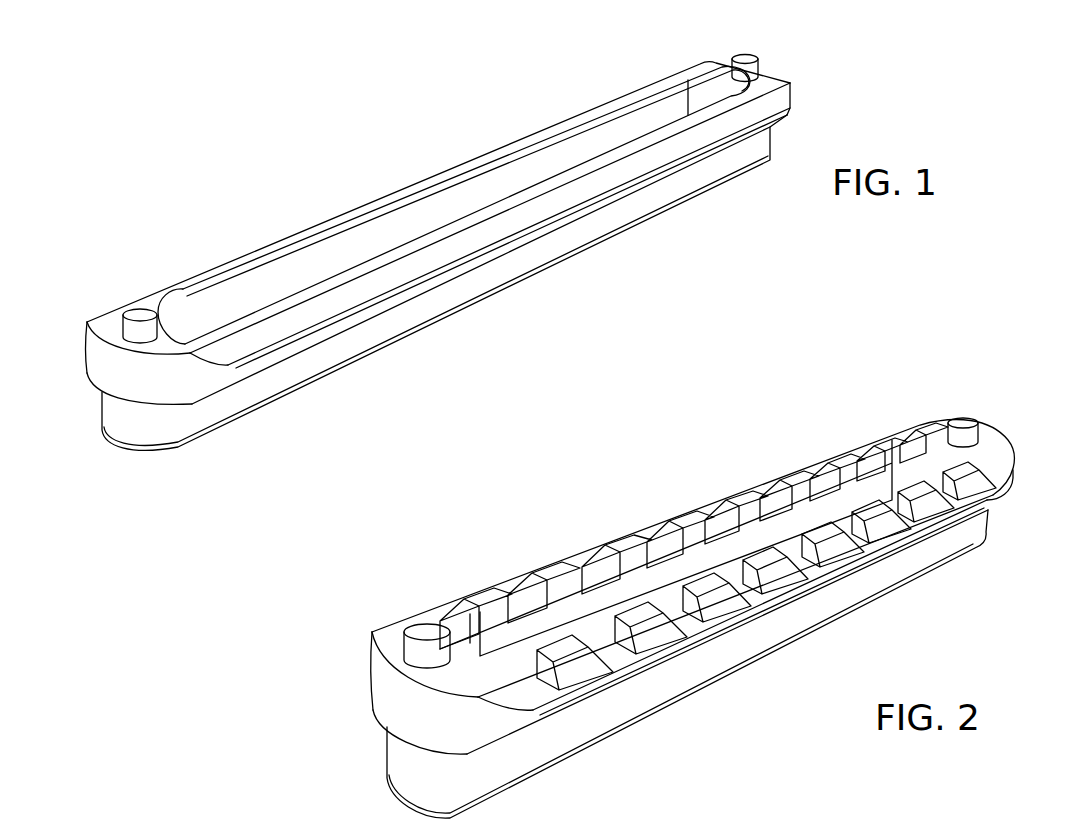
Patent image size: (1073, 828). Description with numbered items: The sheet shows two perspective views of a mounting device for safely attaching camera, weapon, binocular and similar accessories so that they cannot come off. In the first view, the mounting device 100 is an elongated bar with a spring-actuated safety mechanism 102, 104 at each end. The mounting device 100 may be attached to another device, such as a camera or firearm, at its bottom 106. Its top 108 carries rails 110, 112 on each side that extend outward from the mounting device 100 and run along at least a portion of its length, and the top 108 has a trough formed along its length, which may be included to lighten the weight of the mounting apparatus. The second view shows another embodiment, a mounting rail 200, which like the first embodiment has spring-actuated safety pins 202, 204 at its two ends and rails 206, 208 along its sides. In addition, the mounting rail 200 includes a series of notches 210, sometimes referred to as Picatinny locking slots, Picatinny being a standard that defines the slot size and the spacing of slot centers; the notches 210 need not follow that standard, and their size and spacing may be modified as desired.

In FIG. 1, the mounting device 100 is at (374, 158).
In FIG. 1, the safety mechanism 102 is at (140, 308).
In FIG. 1, the safety mechanism 104 is at (749, 55).
In FIG. 1, the bottom 106 is at (398, 343).
In FIG. 1, the top 108 is at (544, 168).
In FIG. 1, the rail 110 is at (544, 238).
In FIG. 1, the rail 112 is at (290, 236).
In FIG. 2, the mounting rail 200 is at (657, 481).
In FIG. 2, the spring-actuated safety pin 202 is at (418, 628).
In FIG. 2, the spring-actuated safety pin 204 is at (963, 418).
In FIG. 2, the rail 206 is at (640, 683).
In FIG. 2, the rail 208 is at (504, 582).
In FIG. 2, the notches 210 is at (808, 477).